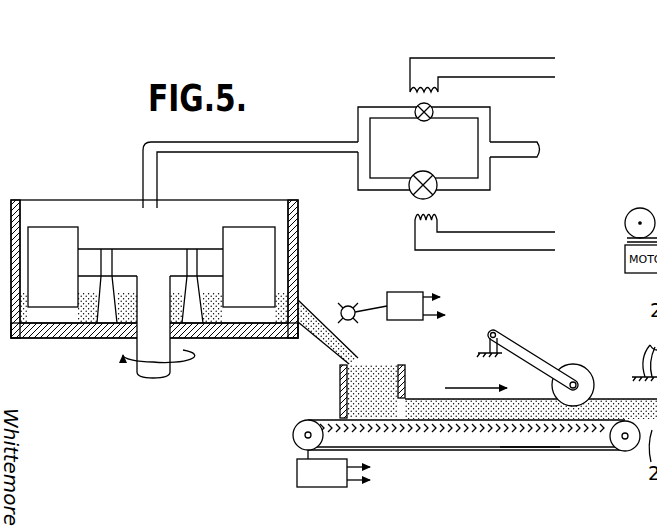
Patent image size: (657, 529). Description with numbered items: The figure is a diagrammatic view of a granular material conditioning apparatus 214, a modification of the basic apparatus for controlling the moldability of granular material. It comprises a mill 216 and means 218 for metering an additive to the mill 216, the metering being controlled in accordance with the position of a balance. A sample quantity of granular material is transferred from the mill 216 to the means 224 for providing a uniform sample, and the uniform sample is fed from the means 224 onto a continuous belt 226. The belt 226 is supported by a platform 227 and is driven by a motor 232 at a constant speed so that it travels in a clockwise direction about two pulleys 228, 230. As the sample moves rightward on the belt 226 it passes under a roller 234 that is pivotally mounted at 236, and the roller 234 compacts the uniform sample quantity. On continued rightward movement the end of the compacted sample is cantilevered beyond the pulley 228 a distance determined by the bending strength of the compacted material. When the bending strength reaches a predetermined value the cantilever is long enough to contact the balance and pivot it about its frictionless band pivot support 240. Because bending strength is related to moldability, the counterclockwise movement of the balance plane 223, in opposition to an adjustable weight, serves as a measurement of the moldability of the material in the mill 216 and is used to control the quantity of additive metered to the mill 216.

The granular material conditioning apparatus 214 is at (285, 383).
The mill 216 is at (299, 260).
The means for metering an additive 218 is at (493, 130).
The balance plane 223 is at (656, 396).
The means for providing a uniform sample 224 is at (338, 382).
The continuous belt 226 is at (448, 421).
The platform 227 is at (522, 424).
The pulley 228 is at (620, 451).
The pulley 230 is at (293, 436).
The motor 232 is at (297, 474).
The roller 234 is at (572, 364).
The pivotal mounting 236 is at (496, 333).
The frictionless band pivot support 240 is at (650, 345).